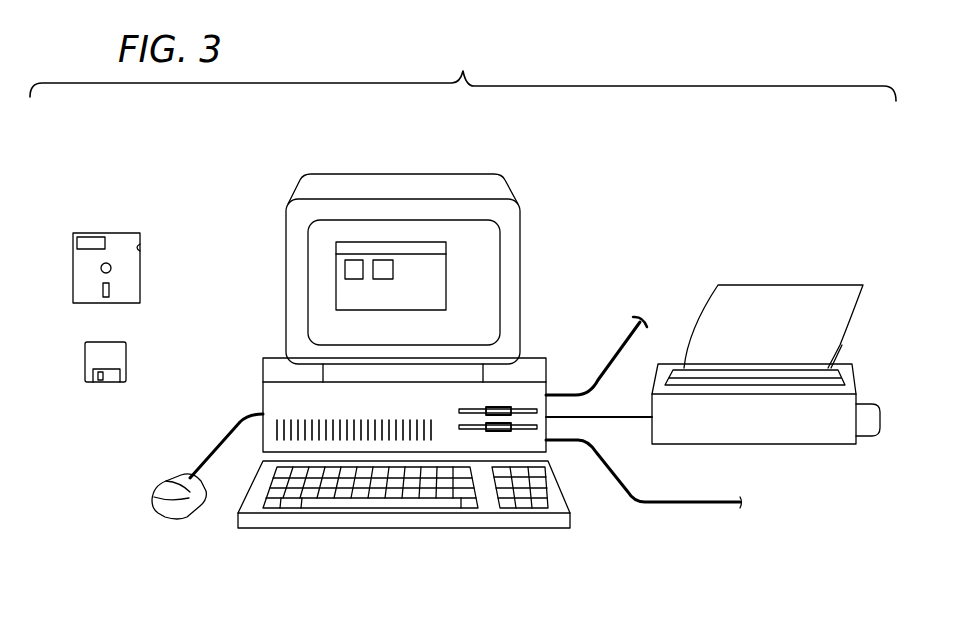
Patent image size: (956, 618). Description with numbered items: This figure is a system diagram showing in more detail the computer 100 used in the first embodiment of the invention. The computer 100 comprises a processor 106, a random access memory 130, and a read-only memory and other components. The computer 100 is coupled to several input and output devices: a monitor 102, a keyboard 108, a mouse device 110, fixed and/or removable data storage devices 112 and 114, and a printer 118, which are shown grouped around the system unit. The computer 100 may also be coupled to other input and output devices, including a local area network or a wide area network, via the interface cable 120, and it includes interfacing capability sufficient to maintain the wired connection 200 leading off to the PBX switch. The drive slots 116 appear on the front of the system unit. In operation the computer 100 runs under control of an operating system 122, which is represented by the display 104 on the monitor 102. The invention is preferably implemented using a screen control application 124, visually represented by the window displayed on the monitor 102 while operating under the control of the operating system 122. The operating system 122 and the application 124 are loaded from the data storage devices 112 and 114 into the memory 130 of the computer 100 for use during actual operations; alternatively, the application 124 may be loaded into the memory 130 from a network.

The computer 100 is at (483, 151).
The monitor 102 is at (286, 292).
The display 104 is at (307, 251).
The processor 106 is at (268, 409).
The keyboard 108 is at (463, 524).
The mouse device 110 is at (160, 490).
The data storage device 112 is at (112, 243).
The data storage device 114 is at (110, 380).
The disk drives 116 is at (459, 422).
The printer 118 is at (735, 440).
The interface cable 120 is at (607, 362).
The operating system 122 is at (323, 238).
The screen control application 124 is at (390, 242).
The random access memory 130 is at (292, 393).
The wired connection 200 is at (646, 505).